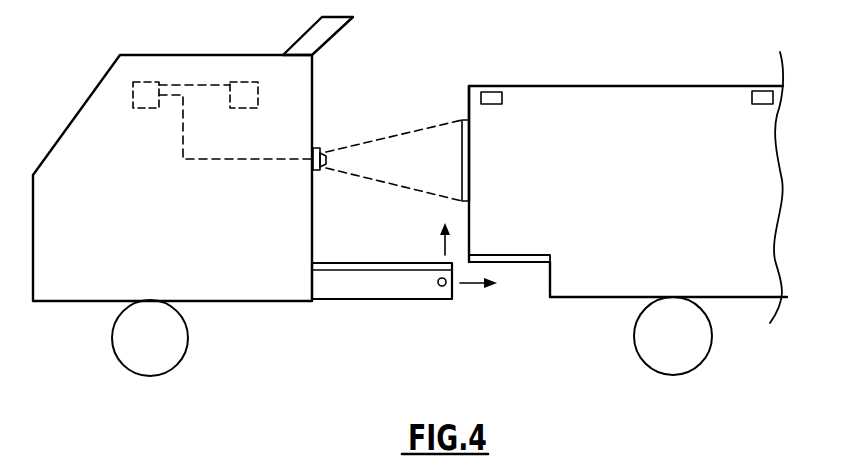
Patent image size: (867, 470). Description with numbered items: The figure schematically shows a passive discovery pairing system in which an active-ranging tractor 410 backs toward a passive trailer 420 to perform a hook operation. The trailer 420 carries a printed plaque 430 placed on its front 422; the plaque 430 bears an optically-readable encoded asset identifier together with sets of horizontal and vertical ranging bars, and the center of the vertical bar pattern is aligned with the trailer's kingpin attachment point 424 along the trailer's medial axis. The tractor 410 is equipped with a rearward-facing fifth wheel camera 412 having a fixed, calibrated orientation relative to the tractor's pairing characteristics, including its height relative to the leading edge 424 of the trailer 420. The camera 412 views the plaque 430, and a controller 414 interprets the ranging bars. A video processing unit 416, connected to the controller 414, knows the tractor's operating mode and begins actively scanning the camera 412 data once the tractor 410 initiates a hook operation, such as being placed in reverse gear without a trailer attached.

The tractor 410 is at (200, 55).
The fifth wheel camera 412 is at (315, 148).
The controller 414 is at (152, 108).
The video processing unit 416 is at (235, 108).
The trailer 420 is at (658, 86).
The front of the trailer 422 is at (469, 96).
The kingpin attachment point / leading edge 424 is at (464, 112).
The printed plaque 430 is at (470, 164).